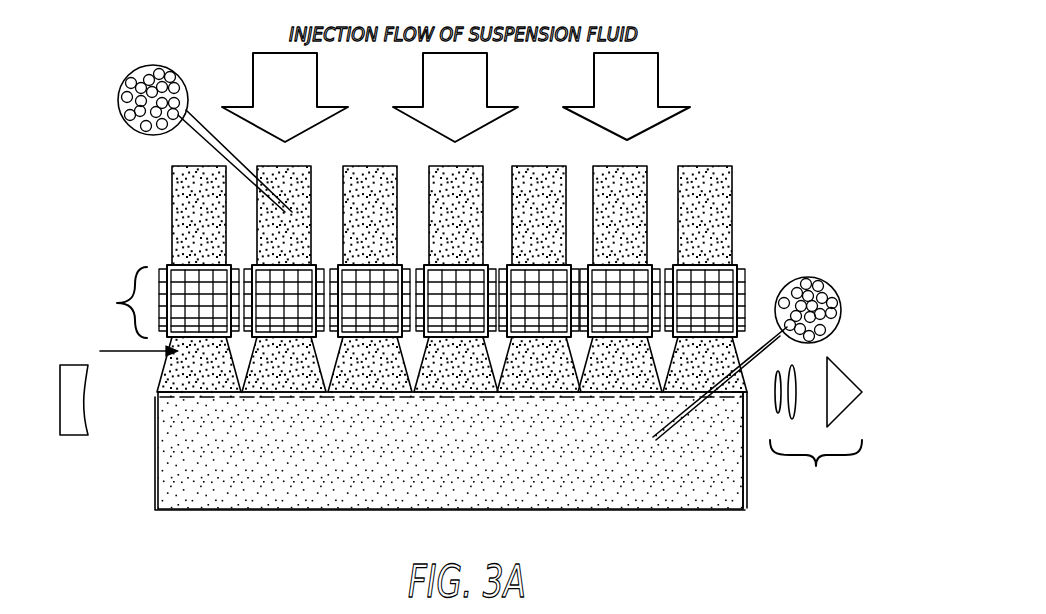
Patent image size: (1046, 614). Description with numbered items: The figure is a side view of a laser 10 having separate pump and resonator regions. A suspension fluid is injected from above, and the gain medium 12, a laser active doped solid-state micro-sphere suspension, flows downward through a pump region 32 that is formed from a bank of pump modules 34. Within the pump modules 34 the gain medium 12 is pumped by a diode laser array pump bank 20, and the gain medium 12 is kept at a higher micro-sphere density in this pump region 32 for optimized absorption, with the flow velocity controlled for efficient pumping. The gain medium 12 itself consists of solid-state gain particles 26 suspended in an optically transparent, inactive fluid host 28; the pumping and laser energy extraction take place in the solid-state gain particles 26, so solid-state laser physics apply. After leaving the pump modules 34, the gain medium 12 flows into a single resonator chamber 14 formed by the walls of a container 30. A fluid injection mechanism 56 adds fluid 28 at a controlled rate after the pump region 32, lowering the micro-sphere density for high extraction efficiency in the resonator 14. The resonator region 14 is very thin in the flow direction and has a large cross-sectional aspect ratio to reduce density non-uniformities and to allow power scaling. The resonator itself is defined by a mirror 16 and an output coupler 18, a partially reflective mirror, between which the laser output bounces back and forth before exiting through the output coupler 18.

The laser 10 is at (741, 83).
The gain medium 12 is at (722, 198).
The resonator chamber 14 is at (215, 398).
The mirror 16 is at (828, 501).
The output coupler 18 is at (73, 425).
The diode laser array pump bank 20 is at (183, 283).
The solid-state gain particles 26 is at (179, 78).
The fluid host 28 is at (148, 132).
The container 30 is at (155, 490).
The pump region 32 is at (108, 321).
The pump modules 34 is at (735, 263).
The fluid injection mechanism 56 is at (140, 351).